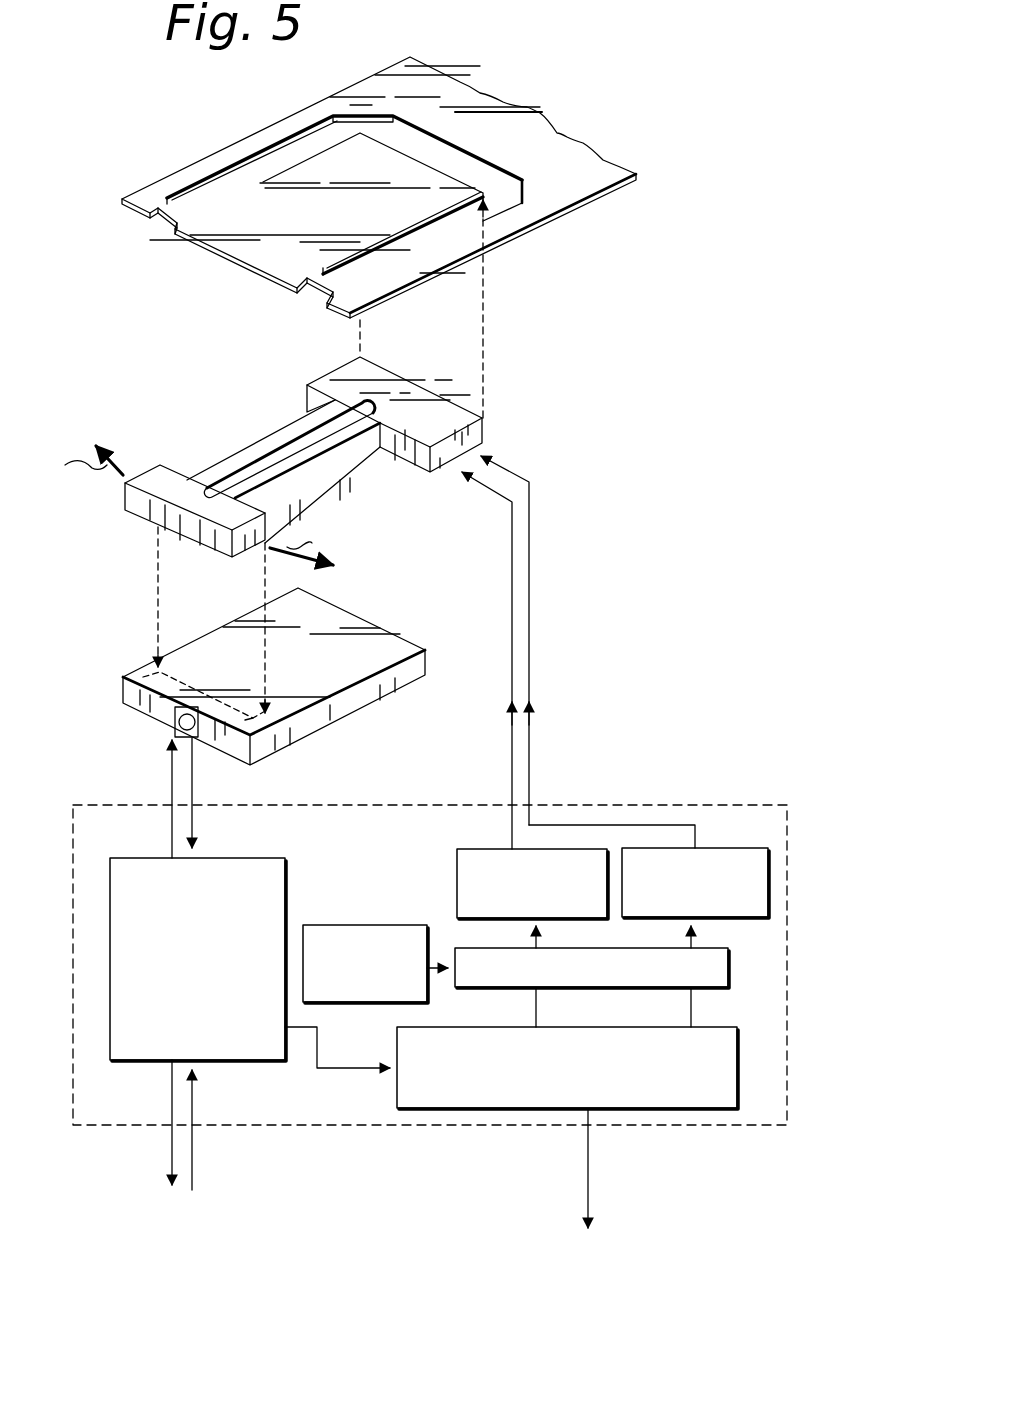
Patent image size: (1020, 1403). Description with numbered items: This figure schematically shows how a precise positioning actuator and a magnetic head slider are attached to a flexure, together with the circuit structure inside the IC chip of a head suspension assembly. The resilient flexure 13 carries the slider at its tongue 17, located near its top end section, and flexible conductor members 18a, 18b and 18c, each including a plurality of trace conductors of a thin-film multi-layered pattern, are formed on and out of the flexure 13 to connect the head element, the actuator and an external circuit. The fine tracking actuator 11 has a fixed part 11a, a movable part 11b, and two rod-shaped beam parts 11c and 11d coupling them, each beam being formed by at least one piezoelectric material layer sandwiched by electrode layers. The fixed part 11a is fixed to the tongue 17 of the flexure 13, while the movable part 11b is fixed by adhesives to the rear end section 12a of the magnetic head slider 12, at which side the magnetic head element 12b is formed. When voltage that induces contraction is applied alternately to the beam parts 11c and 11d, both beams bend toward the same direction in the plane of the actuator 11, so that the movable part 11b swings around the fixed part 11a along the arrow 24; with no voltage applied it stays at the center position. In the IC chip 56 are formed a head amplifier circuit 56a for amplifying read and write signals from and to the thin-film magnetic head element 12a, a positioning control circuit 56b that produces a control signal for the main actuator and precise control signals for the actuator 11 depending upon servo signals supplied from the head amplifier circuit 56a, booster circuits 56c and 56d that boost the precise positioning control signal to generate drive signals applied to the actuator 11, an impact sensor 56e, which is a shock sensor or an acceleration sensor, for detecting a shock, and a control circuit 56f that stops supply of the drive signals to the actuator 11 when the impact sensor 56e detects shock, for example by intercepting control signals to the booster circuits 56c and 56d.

The fine tracking actuator 11 is at (263, 447).
The fixed part 11a is at (343, 380).
The movable part 11b is at (157, 475).
The beam part 11c is at (270, 443).
The beam part 11d is at (310, 475).
The magnetic head slider 12 is at (272, 674).
The thin-film magnetic head element 12a is at (157, 720).
The magnetic head element 12b is at (248, 720).
The flexure 13 is at (494, 117).
The tongue 17 is at (238, 207).
The flexible conductor member 18a is at (178, 770).
The flexible conductor member 18b is at (512, 580).
The flexible conductor member 18c is at (172, 1145).
The arrow 24 is at (190, 505).
The IC chip 56 is at (668, 800).
The head amplifier circuit 56a is at (277, 852).
The positioning control circuit 56b is at (716, 1022).
The booster circuit 56c is at (456, 868).
The booster circuit 56d is at (747, 837).
The impact sensor 56e is at (325, 920).
The control circuit 56f is at (747, 966).